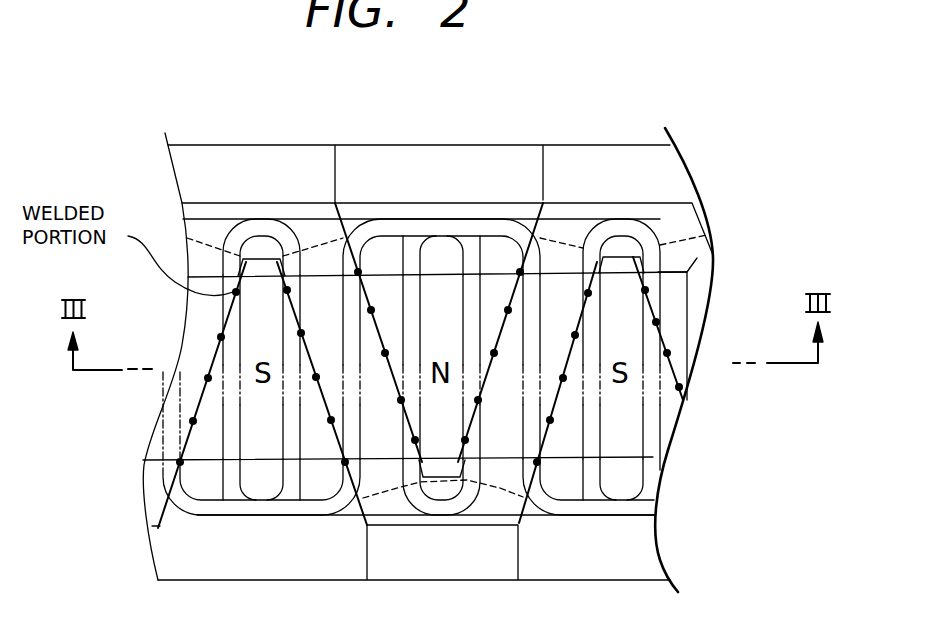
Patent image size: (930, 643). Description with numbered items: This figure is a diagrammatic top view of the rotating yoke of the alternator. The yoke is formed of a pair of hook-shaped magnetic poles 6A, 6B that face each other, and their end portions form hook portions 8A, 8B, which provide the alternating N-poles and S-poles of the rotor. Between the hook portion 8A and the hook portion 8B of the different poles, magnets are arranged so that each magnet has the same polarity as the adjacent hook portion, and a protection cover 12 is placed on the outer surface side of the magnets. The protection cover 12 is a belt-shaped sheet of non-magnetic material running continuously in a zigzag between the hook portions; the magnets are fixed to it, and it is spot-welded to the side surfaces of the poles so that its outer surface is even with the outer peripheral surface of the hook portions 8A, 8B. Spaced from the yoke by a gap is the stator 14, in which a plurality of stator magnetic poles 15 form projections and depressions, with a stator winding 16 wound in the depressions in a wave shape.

The hook-shaped magnetic pole 6A is at (493, 147).
The hook-shaped magnetic pole 6B is at (265, 562).
The hook portion 8A is at (427, 440).
The hook portion 8B is at (250, 343).
The protection cover 12 is at (348, 440).
The stator 14 is at (688, 268).
The stator magnetic pole 15 is at (680, 303).
The stator winding 16 is at (570, 510).